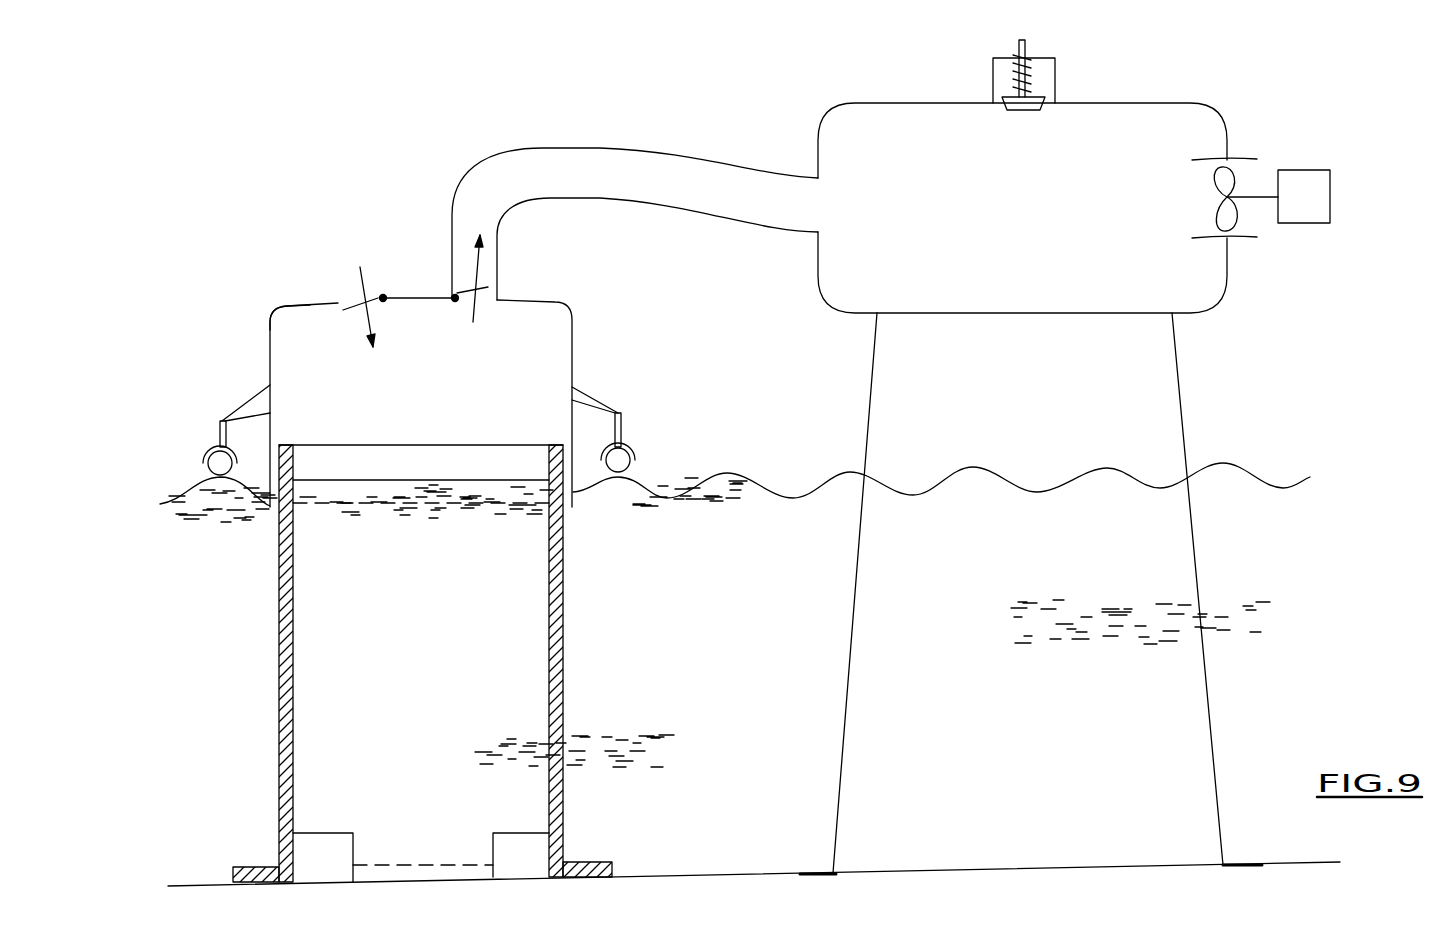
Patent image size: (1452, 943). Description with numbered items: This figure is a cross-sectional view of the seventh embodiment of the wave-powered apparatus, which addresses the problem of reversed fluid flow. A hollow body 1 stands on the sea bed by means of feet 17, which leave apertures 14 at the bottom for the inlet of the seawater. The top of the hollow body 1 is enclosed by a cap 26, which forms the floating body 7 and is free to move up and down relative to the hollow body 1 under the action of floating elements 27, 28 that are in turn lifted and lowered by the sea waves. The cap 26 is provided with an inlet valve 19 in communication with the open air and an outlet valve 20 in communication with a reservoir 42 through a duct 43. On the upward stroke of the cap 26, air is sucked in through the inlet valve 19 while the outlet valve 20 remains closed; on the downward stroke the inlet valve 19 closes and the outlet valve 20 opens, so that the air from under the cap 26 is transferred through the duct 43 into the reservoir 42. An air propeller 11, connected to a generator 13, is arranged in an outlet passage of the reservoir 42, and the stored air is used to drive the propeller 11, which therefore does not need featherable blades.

The hollow body 1 is at (568, 640).
The floating body 7 is at (578, 343).
The air propeller 11 is at (1243, 179).
The generator 13 is at (1307, 223).
The apertures 14 is at (325, 850).
The feet 17 is at (560, 843).
The inlet valve 19 is at (370, 292).
The outlet valve 20 is at (467, 302).
The cap 26 is at (273, 318).
The floating element 27 is at (217, 466).
The floating element 28 is at (623, 467).
The reservoir 42 is at (863, 123).
The duct 43 is at (618, 163).